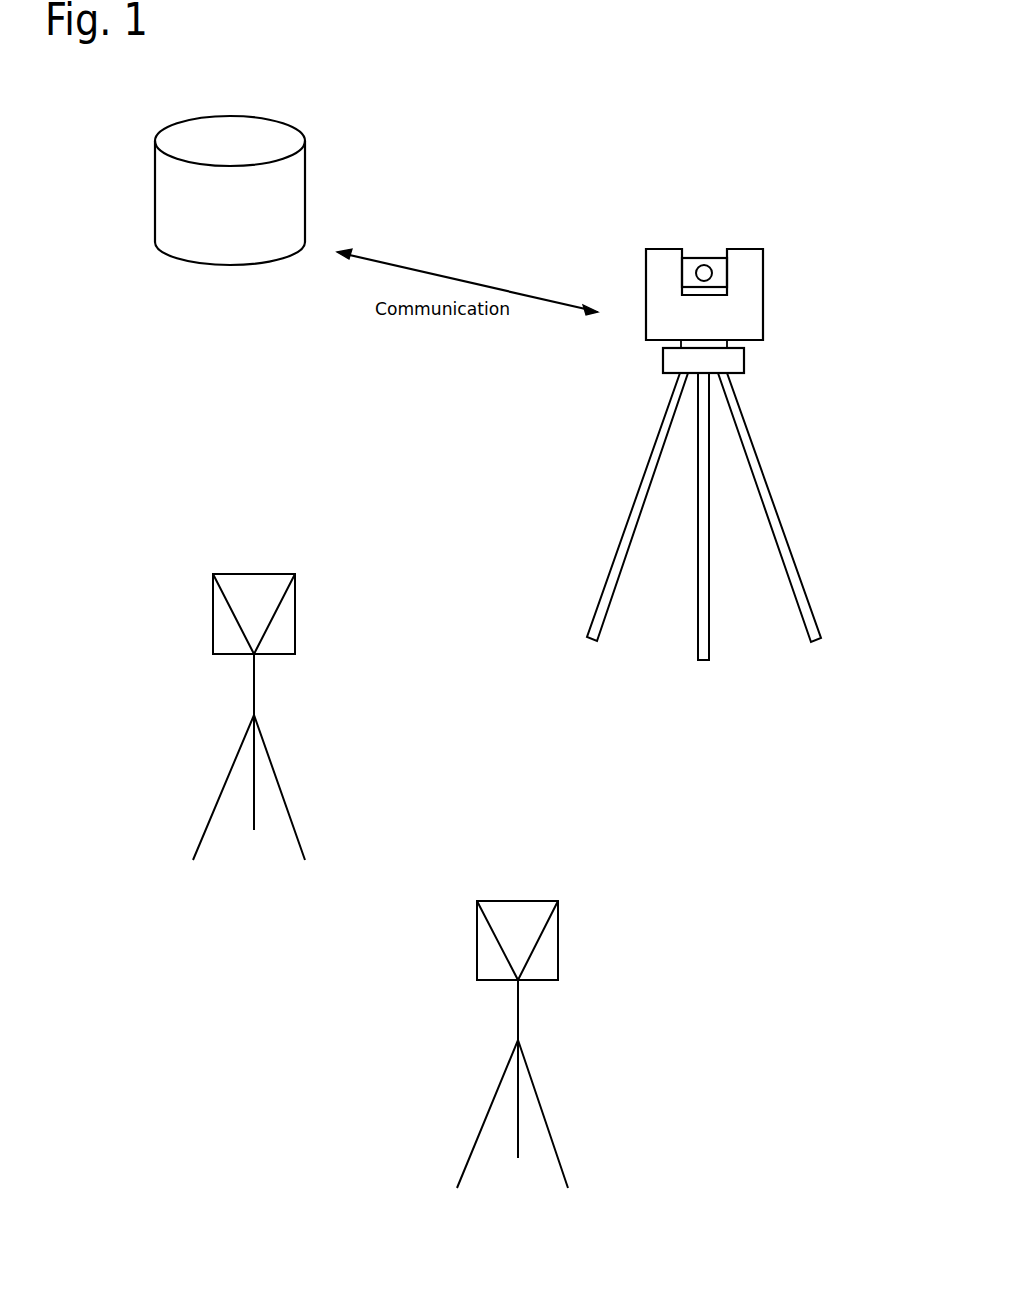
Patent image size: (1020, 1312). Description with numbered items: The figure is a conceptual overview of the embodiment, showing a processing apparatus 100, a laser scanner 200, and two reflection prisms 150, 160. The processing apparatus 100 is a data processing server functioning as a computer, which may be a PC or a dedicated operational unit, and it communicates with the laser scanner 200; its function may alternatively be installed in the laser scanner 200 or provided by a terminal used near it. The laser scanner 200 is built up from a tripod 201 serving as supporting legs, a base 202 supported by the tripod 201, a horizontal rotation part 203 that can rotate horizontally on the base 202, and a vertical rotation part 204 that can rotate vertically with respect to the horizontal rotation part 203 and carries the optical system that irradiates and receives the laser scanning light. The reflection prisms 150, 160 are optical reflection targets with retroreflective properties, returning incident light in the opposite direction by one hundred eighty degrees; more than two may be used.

The processing apparatus 100 is at (305, 192).
The reflection prism 150 is at (242, 576).
The reflection prism 160 is at (505, 902).
The laser scanner 200 is at (746, 401).
The tripod 201 is at (792, 553).
The base 202 is at (744, 365).
The horizontal rotation part 203 is at (763, 302).
The vertical rotation part 204 is at (708, 258).